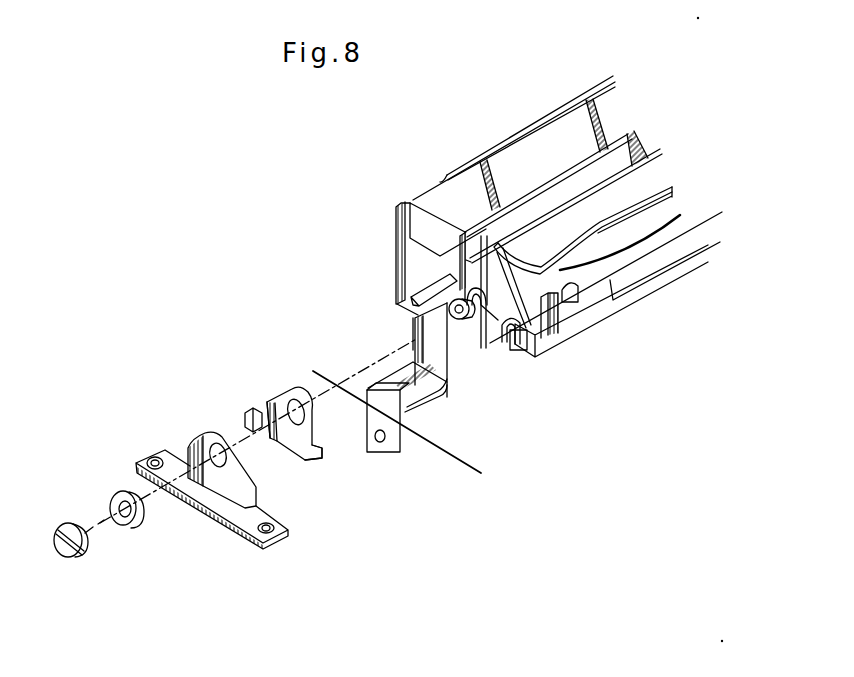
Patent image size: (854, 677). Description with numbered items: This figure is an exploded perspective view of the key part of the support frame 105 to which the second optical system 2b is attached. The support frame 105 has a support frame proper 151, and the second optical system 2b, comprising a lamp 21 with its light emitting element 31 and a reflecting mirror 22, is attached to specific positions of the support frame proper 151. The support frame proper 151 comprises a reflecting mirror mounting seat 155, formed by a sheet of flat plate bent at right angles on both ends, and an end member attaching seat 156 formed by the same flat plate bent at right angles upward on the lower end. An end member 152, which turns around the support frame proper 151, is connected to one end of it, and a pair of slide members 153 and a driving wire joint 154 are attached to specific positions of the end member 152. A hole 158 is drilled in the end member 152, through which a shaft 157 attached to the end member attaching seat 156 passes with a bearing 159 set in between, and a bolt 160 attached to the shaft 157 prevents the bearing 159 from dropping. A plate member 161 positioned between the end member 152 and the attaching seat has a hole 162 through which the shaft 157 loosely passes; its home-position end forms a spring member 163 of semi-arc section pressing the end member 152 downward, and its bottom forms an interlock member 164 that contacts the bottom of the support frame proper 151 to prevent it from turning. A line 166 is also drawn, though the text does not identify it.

The second optical system 2b is at (577, 92).
The support frame 105 is at (526, 124).
The support frame proper 151 is at (481, 155).
The reflecting mirror mounting seat 155 is at (396, 236).
The reflecting mirror 22 is at (420, 293).
The shaft 157 is at (450, 311).
The end member attaching seat 156 is at (478, 333).
The light emitting element 31 is at (523, 338).
The lamp 21 is at (655, 308).
The driving wire joint 154 is at (386, 455).
The pivot line 166 is at (457, 462).
The interlock member 164 is at (326, 440).
The plate member 161 is at (301, 408).
The hole 162 is at (295, 396).
The spring member 163 is at (243, 428).
The hole 158 is at (222, 437).
The end member 152 is at (201, 489).
The slide members 153 is at (292, 567).
The bearing 159 is at (130, 528).
The bolt 160 is at (70, 555).